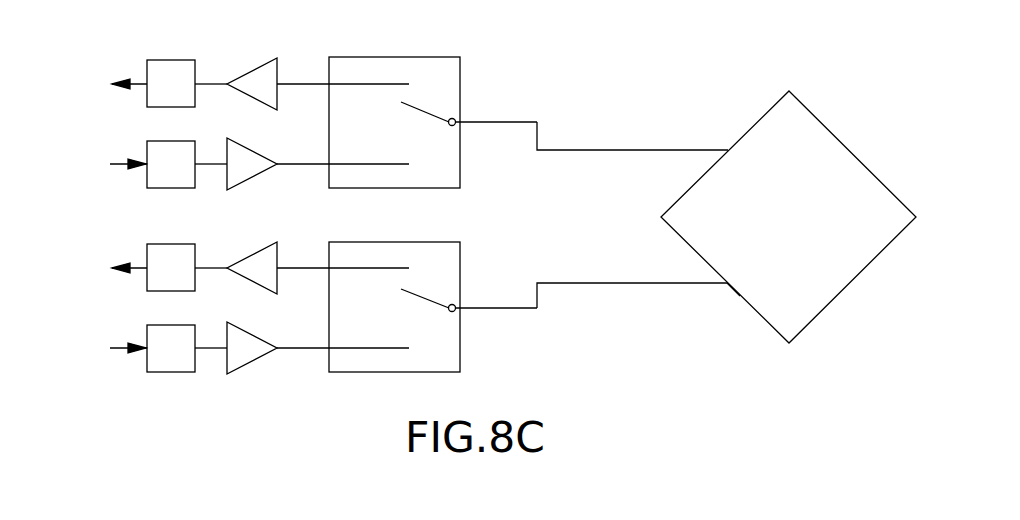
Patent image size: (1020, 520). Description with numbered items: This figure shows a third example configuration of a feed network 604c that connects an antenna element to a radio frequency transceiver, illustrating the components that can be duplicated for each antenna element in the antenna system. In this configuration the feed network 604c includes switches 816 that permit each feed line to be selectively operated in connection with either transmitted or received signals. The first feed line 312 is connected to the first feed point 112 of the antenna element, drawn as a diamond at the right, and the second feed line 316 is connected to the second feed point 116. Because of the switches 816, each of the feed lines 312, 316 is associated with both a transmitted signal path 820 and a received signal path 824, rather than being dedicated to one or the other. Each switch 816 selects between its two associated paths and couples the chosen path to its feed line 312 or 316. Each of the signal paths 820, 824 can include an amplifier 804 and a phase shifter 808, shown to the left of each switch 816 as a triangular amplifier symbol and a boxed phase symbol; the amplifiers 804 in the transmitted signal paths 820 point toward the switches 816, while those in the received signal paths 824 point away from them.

The feed network 604c is at (447, 40).
The phase shifter 808 is at (188, 58).
The amplifier 804 is at (262, 60).
The received signal path 824 is at (134, 82).
The transmitted signal path 820 is at (122, 168).
The switch 816 is at (460, 78).
The first feed line 312 is at (568, 148).
The second feed line 316 is at (558, 282).
The first feed point 112 is at (728, 148).
The second feed point 116 is at (722, 290).